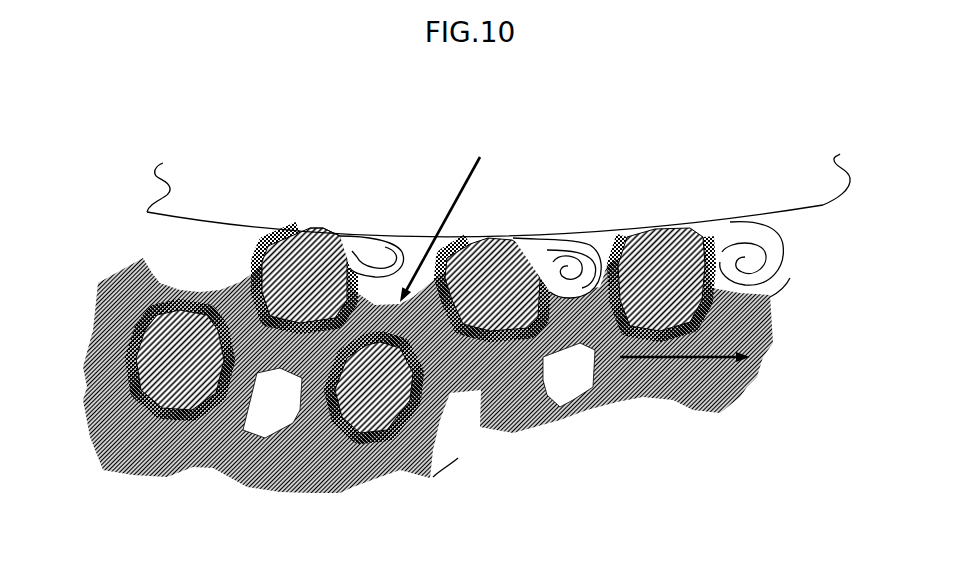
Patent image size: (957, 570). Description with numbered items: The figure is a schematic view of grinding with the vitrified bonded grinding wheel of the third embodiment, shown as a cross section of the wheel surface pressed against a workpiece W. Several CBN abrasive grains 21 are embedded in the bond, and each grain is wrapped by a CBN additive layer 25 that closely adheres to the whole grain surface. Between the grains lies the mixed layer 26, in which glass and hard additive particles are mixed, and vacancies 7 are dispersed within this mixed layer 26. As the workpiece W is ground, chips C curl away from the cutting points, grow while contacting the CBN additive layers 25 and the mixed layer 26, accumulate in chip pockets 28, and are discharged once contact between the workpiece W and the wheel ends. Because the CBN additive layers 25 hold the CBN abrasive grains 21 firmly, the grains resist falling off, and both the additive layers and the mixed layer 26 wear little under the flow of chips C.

The CBN abrasive grain 21 is at (293, 258).
The CBN additive layer 25 is at (312, 228).
The mixed layer 26 is at (653, 375).
The vacancy 7 is at (565, 373).
The chip C is at (390, 245).
The workpiece W is at (597, 195).
The chip pocket 28 is at (445, 214).